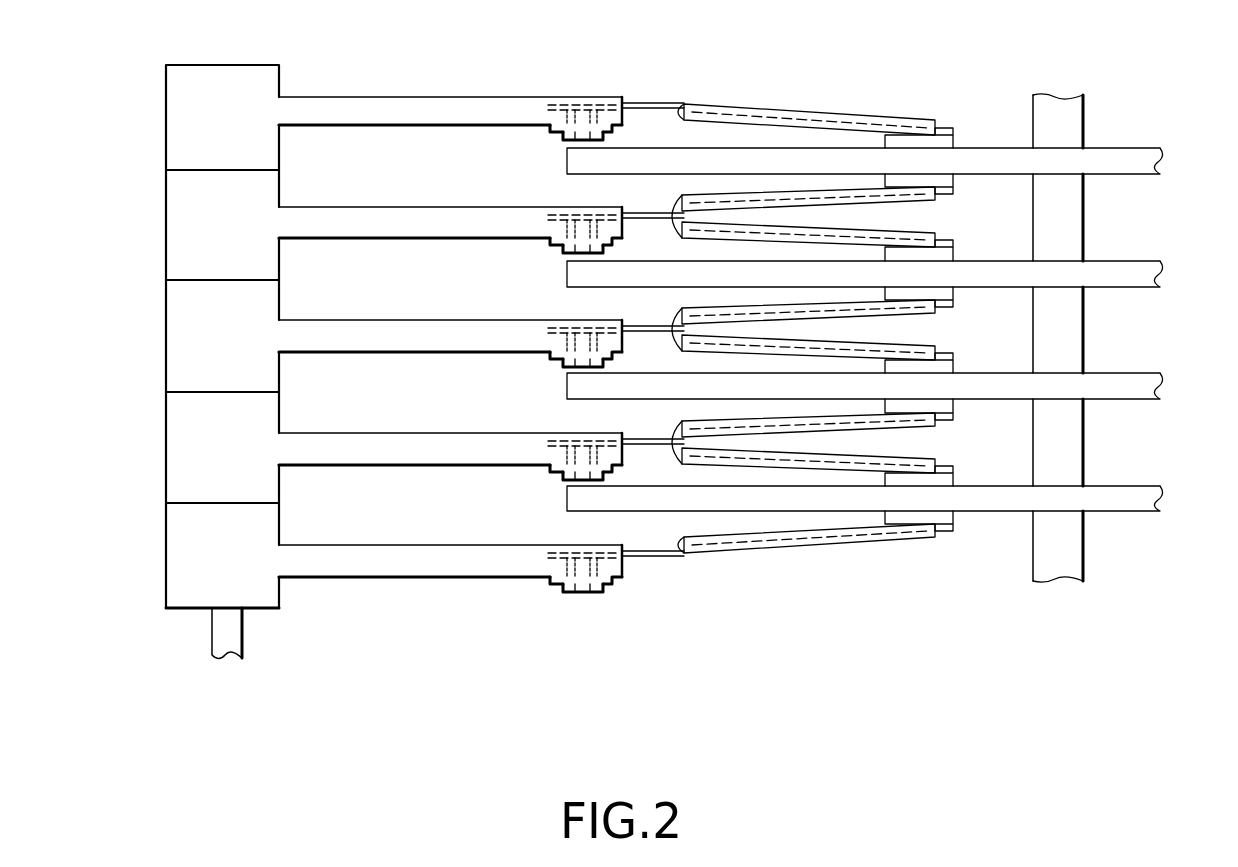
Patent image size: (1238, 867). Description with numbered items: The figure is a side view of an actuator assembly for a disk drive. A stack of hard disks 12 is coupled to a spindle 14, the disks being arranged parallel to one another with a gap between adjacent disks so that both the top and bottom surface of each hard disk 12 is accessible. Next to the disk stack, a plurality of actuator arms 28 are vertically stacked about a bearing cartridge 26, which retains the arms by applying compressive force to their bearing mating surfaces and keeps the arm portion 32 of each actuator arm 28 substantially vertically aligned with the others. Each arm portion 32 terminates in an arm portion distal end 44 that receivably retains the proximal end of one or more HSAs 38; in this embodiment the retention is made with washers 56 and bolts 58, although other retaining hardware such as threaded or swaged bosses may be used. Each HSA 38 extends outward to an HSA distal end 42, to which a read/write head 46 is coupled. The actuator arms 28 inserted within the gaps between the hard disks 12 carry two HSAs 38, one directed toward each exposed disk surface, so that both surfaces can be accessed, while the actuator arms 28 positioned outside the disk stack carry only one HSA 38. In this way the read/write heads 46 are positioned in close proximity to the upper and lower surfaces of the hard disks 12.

The hard disk 12 is at (1143, 148).
The spindle 14 is at (1070, 97).
The bearing cartridge 26 is at (244, 633).
The actuator arm 28 is at (363, 95).
The arm portion 32 is at (468, 108).
The HSA 38 is at (683, 113).
The HSA distal end 42 is at (913, 130).
The arm portion distal end 44 is at (623, 97).
The read/write head 46 is at (955, 137).
The washer 56 is at (550, 128).
The bolt 58 is at (563, 138).